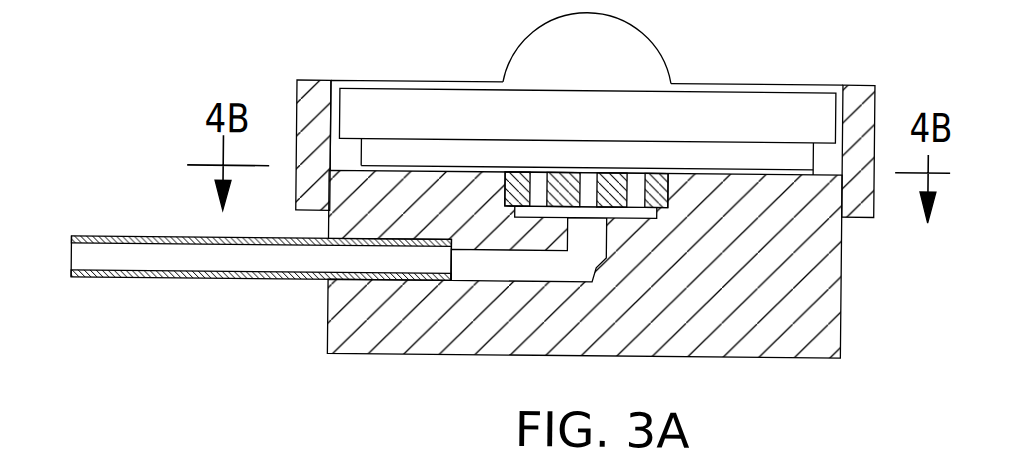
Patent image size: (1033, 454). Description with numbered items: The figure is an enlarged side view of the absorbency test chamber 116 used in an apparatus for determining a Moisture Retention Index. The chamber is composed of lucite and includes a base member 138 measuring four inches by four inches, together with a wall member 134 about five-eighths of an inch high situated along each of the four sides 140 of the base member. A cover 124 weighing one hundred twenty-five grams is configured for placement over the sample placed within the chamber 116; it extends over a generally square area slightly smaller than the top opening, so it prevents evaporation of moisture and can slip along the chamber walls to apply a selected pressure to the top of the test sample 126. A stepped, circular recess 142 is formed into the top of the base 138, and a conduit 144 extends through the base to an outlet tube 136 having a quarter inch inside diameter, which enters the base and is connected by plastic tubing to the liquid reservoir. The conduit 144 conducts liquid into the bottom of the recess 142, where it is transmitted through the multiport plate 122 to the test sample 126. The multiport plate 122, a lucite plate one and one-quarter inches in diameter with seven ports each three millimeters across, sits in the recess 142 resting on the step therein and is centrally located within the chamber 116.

The absorbency test chamber 116 is at (279, 74).
The multiport plate 122 is at (652, 172).
The cover 124 is at (425, 99).
The test sample 126 is at (760, 159).
The wall member 134 is at (797, 158).
The outlet tube 136 is at (156, 238).
The base member 138 is at (782, 330).
The sides 140 is at (318, 80).
The stepped, circular recess 142 is at (590, 210).
The conduit 144 is at (494, 260).